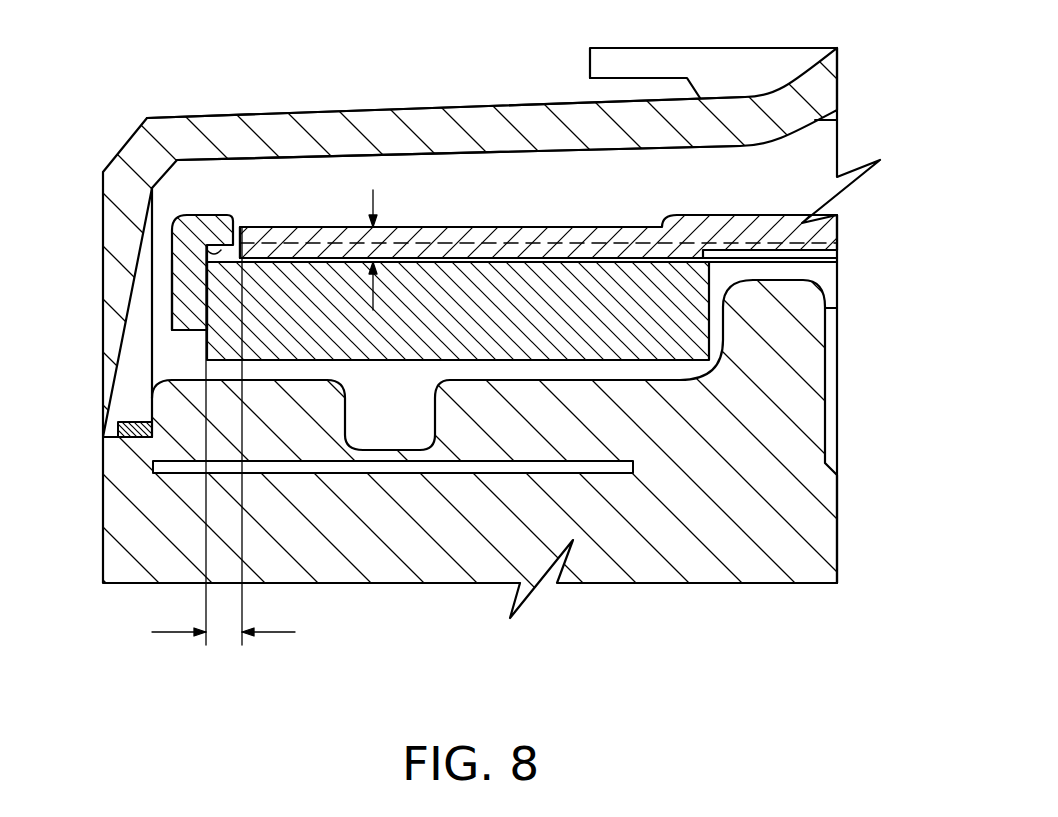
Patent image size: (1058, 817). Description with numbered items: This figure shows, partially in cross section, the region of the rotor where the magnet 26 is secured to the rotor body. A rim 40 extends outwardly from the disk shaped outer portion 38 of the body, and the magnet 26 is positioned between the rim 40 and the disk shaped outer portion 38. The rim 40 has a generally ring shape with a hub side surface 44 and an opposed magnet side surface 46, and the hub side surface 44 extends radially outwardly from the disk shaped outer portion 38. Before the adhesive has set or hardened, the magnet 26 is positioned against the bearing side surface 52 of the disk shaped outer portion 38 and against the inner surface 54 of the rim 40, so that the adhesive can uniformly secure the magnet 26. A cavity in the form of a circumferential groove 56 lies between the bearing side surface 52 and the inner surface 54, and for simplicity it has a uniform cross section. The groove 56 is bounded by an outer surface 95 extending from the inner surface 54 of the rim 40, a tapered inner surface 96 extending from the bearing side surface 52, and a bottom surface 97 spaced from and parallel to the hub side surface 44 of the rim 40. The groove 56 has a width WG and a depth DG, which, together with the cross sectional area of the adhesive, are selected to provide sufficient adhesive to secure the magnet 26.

The magnet 26 is at (677, 362).
The disk shaped outer portion 38 is at (473, 227).
The rim 40 is at (172, 254).
The hub side surface 44 is at (212, 215).
The magnet side surface 46 is at (192, 330).
The bearing side surface 52 is at (490, 260).
The inner surface 54 is at (208, 303).
The groove 56 is at (243, 245).
The outer surface 95 is at (173, 290).
The tapered inner surface 96 is at (236, 262).
The bottom surface 97 is at (222, 246).
The depth of the groove DG is at (376, 197).
The width of the groove WG is at (167, 632).